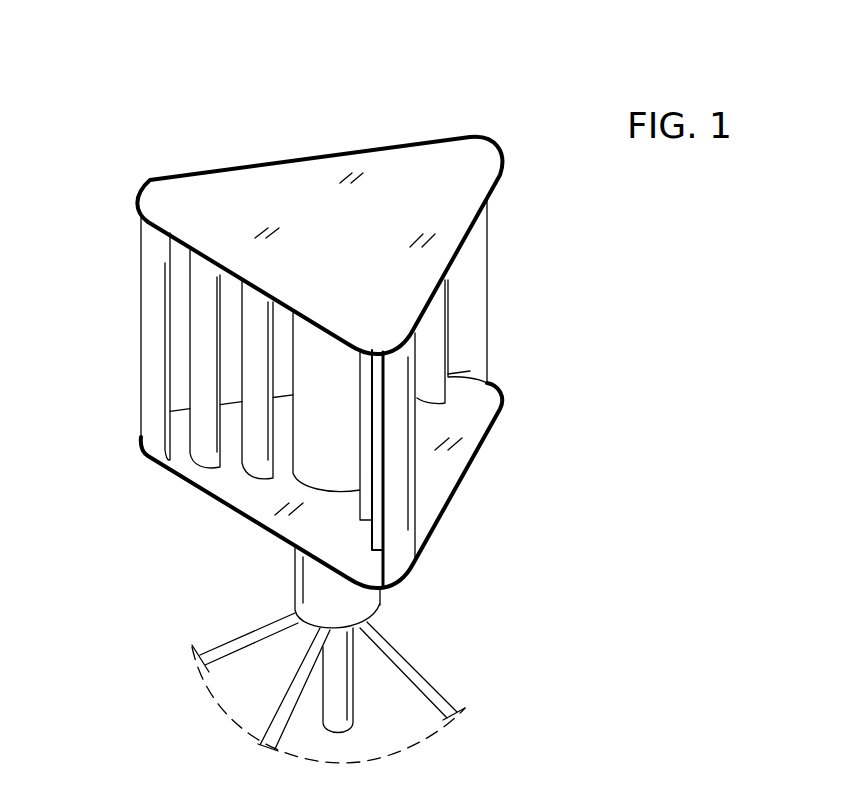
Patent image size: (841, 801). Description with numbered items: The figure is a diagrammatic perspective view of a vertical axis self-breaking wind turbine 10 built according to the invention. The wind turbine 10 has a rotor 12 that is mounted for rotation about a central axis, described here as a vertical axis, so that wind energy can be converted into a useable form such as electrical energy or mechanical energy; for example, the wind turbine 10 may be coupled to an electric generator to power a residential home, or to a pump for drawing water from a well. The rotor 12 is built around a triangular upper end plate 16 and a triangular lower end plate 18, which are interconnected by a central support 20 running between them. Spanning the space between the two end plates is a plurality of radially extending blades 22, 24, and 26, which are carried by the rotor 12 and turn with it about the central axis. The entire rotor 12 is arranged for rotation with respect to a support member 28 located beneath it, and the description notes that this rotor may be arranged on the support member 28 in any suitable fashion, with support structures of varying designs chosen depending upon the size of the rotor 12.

The wind turbine 10 is at (359, 102).
The rotor 12 is at (560, 438).
The triangular upper end plate 16 is at (295, 186).
The triangular lower end plate 18 is at (235, 495).
The central support 20 is at (328, 365).
The blade 22 is at (157, 348).
The blade 24 is at (403, 527).
The blade 26 is at (487, 340).
The support member 28 is at (372, 603).